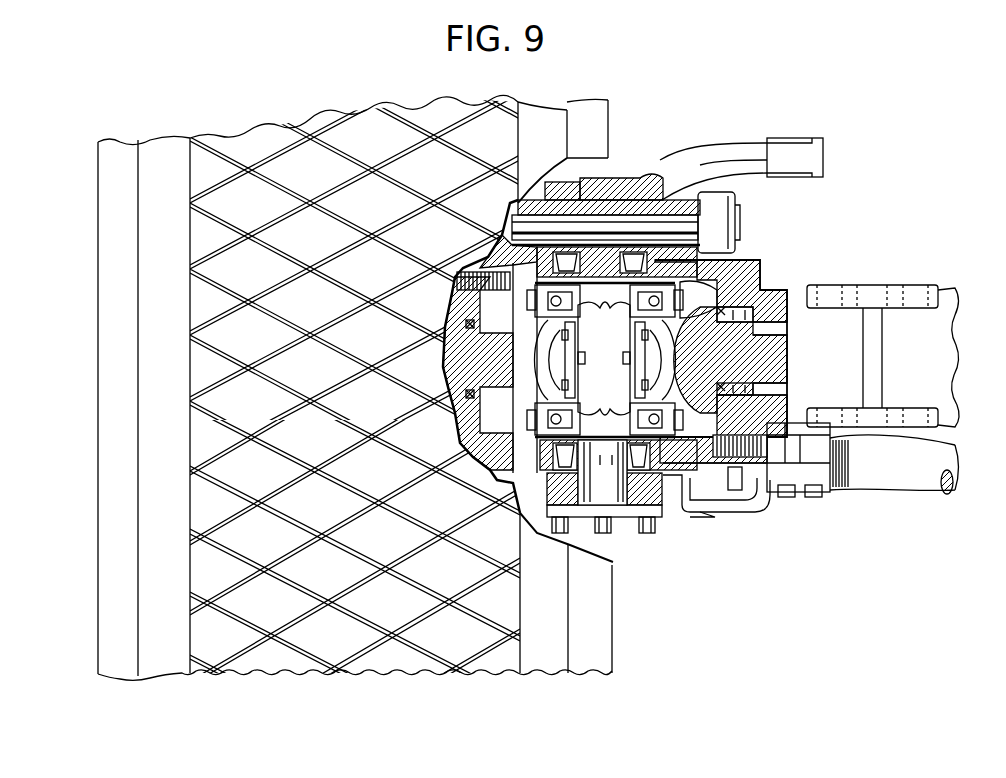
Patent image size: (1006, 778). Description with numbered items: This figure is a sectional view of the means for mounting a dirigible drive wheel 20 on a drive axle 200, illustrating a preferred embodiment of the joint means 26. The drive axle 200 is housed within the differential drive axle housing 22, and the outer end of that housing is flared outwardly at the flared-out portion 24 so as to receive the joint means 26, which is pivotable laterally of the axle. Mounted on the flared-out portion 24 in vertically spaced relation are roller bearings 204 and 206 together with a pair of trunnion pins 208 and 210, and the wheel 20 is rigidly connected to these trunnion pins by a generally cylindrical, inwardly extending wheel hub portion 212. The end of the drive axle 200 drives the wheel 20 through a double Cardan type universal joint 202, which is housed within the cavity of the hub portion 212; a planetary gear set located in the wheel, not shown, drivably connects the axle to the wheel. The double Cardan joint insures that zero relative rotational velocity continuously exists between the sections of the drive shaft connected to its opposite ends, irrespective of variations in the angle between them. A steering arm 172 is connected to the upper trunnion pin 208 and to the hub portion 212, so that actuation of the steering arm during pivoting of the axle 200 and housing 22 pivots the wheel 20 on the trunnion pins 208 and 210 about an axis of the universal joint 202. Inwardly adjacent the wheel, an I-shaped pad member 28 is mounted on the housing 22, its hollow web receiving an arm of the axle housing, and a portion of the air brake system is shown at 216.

The rear drive wheel 20 is at (610, 642).
The differential drive axle housing 22 is at (955, 292).
The flared-out portion 24 is at (732, 262).
The joint means 26 is at (675, 527).
The I-shaped pad member 28 is at (900, 285).
The steering arm 172 is at (812, 160).
The drive axle 200 is at (790, 345).
The double Cardan type universal joint 202 is at (706, 228).
The roller bearing 204 is at (512, 216).
The roller bearing 206 is at (547, 470).
The upper trunnion pin 208 is at (667, 202).
The trunnion pin 210 is at (608, 487).
The wheel hub portion 212 is at (497, 483).
The air brake system portion 216 is at (587, 226).